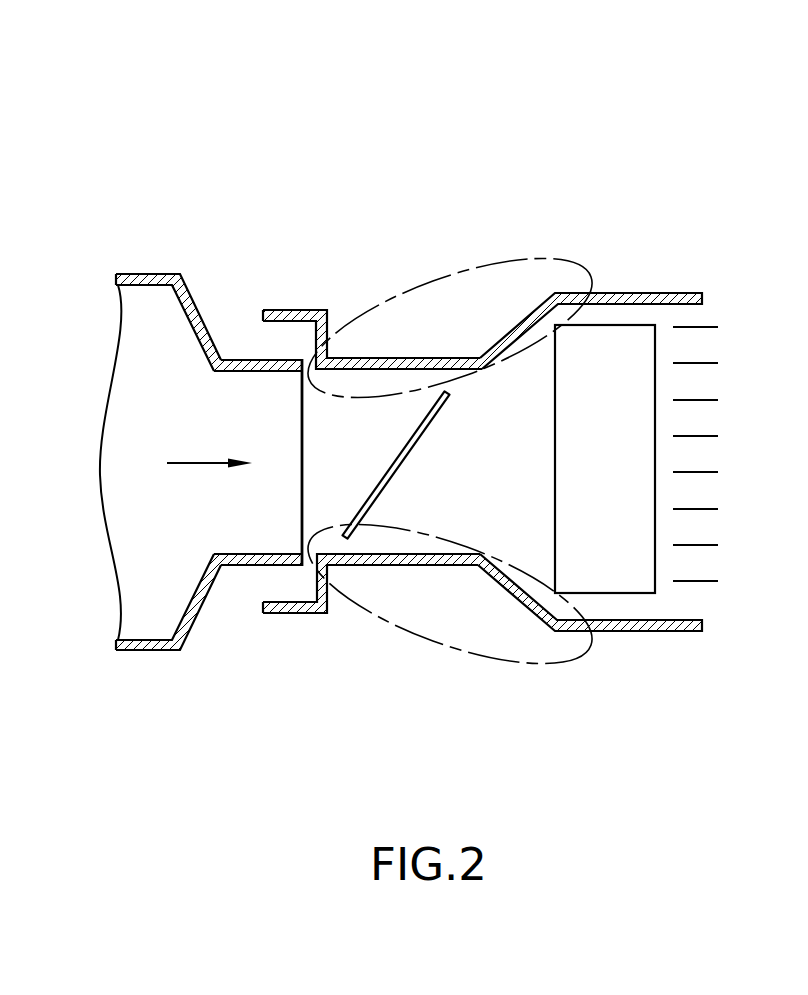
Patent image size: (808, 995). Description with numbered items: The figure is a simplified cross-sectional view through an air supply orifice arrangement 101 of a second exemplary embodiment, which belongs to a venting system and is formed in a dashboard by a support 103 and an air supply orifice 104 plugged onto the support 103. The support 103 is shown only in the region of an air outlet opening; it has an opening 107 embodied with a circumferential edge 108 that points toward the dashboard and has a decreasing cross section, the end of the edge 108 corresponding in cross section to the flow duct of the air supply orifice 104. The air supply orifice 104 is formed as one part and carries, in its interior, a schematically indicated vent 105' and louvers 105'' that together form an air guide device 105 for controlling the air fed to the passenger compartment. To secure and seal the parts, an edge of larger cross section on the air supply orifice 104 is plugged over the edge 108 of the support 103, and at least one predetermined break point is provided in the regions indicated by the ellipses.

The air supply orifice arrangement 101 is at (375, 242).
The support 103 is at (171, 681).
The air supply orifice 104 is at (490, 711).
The air guide device 105 is at (450, 231).
The vent 105' is at (391, 527).
The louvers 105'' is at (666, 380).
The opening 107 is at (187, 464).
The circumferential edge 108 is at (235, 359).